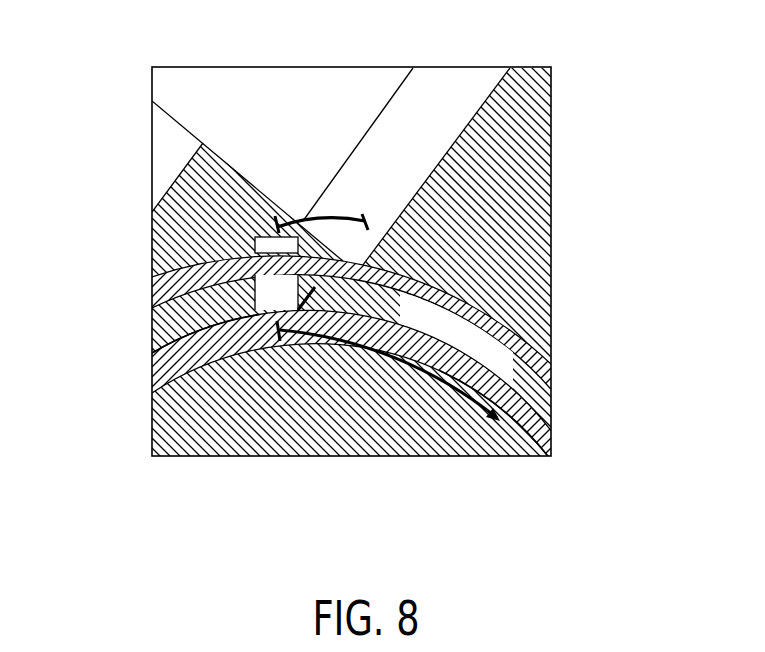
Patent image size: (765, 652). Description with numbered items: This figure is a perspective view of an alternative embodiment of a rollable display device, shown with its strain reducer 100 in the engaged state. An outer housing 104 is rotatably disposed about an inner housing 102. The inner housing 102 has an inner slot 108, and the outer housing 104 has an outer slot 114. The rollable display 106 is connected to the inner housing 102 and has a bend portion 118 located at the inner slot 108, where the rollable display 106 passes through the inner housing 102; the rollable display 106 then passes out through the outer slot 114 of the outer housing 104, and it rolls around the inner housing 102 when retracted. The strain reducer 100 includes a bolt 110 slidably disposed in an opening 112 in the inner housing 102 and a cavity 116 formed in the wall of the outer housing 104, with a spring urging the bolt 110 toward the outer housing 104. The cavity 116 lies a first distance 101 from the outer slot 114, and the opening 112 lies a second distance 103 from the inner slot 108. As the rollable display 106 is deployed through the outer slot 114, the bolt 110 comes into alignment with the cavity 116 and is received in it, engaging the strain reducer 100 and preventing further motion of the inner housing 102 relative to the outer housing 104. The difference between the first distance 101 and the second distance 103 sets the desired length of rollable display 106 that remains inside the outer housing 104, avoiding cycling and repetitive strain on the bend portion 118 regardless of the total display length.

The strain reducer 100 is at (135, 333).
The first distance 101 is at (345, 215).
The inner housing 102 is at (250, 430).
The second distance 103 is at (453, 388).
The outer housing 104 is at (553, 143).
The rollable display 106 is at (236, 90).
The inner slot 108 is at (520, 392).
The bolt 110 is at (200, 336).
The opening 112 is at (336, 338).
The outer slot 114 is at (440, 152).
The cavity 116 is at (298, 250).
The bend portion 118 is at (513, 378).